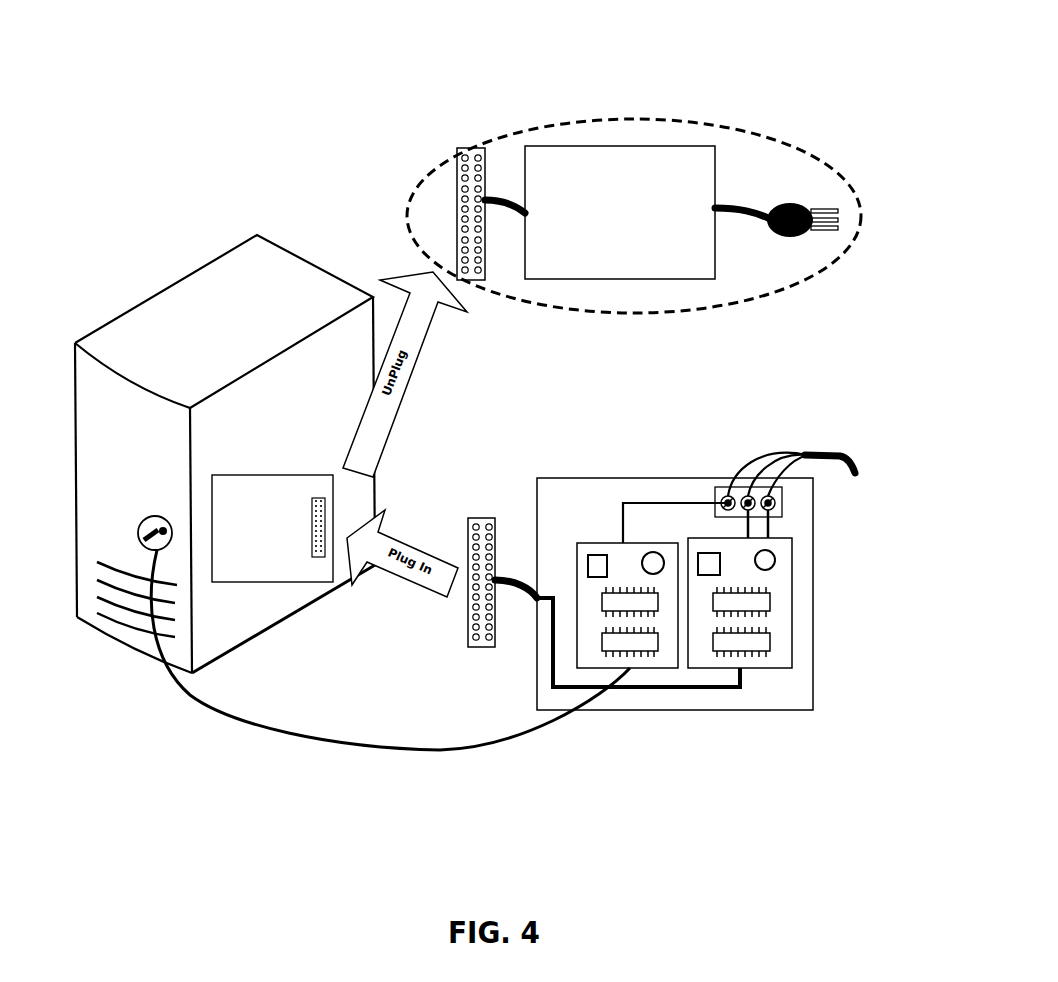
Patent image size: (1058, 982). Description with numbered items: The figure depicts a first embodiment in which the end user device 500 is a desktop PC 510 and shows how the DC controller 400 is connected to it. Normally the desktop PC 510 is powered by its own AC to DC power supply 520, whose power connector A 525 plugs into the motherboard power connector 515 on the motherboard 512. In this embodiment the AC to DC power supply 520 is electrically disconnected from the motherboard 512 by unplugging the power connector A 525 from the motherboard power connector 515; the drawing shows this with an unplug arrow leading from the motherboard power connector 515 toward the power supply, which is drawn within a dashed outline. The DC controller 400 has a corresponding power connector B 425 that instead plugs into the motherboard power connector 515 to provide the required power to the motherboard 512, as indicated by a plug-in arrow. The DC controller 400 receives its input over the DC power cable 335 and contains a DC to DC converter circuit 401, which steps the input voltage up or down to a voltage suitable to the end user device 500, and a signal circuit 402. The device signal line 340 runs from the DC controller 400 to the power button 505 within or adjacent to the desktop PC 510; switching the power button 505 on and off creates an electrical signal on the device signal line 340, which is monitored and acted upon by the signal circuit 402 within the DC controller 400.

The end user device 500 is at (297, 457).
The desktop PC 510 is at (120, 317).
The motherboard 512 is at (245, 582).
The motherboard power connector 515 is at (310, 545).
The power button 505 is at (140, 537).
The device signal line 340 is at (418, 750).
The power connector A 525 is at (467, 148).
The AC to DC power supply 520 is at (548, 146).
The power connector B 425 is at (475, 517).
The DC controller 400 is at (537, 478).
The signal circuit 402 is at (673, 670).
The DC to DC converter circuit 401 is at (783, 670).
The DC power cable 335 is at (835, 455).